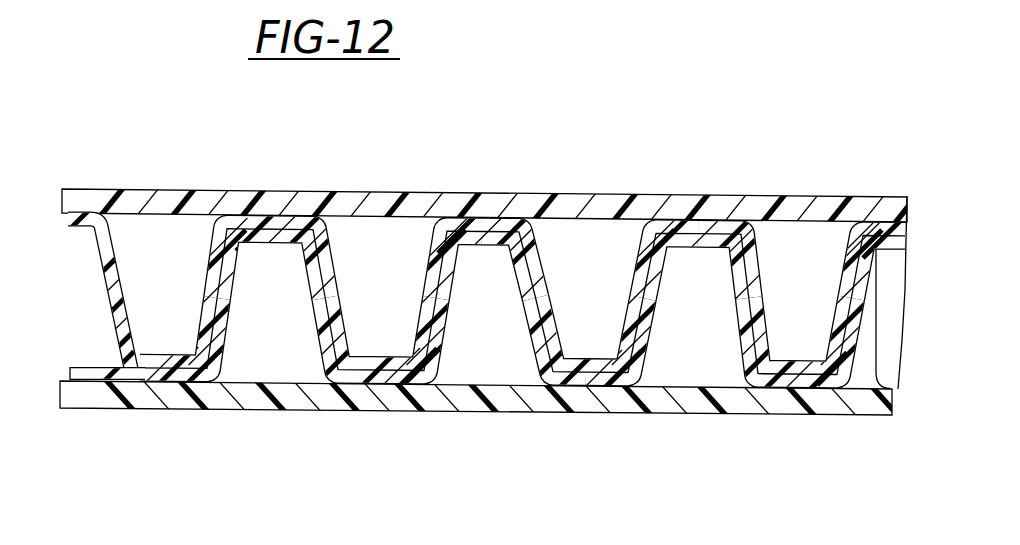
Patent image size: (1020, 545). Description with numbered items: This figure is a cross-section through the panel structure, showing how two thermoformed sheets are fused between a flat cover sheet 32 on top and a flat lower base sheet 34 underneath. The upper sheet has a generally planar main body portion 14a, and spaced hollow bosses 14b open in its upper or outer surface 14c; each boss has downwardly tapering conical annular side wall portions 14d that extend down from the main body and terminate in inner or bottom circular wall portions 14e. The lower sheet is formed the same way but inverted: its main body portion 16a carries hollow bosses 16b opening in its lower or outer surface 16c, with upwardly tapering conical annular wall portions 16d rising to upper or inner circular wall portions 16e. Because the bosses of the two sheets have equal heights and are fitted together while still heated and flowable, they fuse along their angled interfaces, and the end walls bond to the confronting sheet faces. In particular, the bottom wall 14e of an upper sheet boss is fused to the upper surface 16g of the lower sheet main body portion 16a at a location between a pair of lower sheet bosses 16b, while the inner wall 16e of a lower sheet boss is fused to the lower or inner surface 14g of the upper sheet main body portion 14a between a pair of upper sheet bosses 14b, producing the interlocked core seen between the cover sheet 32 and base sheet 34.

The flat cover sheet 32 is at (145, 186).
The flat lower base sheet 34 is at (322, 412).
The main body portion 14a is at (509, 207).
The hollow bosses 14b is at (94, 277).
The upper or outer surface 14c is at (284, 213).
The conical annular side wall portions 14d is at (130, 320).
The inner or bottom circular wall portions 14e is at (165, 345).
The lower or inner surface 14g is at (712, 246).
The main body portion 16a is at (390, 388).
The hollow bosses 16b is at (518, 345).
The lower or outer surface 16c is at (615, 386).
The conical annular wall portions 16d is at (512, 278).
The upper or inner circular wall portions 16e is at (712, 247).
The upper surface 16g is at (782, 412).